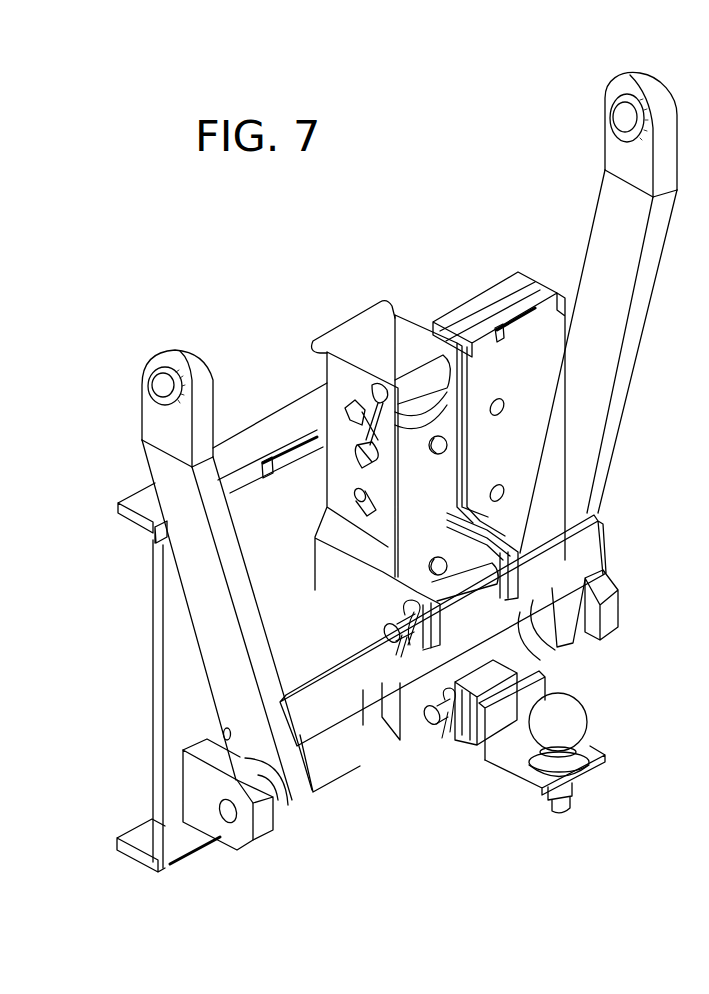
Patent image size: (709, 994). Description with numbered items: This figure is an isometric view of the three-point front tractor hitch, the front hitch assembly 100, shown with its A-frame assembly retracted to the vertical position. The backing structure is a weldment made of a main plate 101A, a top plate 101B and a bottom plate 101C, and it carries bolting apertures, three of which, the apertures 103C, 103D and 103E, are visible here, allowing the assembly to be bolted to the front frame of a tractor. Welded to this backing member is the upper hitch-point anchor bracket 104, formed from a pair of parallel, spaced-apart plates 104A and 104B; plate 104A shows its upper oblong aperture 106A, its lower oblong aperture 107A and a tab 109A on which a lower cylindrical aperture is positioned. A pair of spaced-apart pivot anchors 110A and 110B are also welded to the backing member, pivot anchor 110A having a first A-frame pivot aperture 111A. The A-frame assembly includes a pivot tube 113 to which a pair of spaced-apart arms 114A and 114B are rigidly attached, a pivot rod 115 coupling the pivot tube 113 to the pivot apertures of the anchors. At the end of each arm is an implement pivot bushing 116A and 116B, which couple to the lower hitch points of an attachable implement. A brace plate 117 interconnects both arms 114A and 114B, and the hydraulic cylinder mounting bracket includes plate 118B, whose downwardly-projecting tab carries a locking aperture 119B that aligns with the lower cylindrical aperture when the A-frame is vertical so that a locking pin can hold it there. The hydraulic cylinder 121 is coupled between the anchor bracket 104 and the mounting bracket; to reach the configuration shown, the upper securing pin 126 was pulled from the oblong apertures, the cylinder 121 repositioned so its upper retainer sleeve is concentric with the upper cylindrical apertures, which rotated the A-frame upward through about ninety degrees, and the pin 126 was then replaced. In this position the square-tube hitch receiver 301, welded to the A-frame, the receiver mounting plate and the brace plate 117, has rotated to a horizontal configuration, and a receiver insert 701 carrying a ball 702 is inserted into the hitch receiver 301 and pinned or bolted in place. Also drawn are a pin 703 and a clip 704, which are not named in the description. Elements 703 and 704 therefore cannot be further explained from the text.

The front hitch assembly 100 is at (290, 248).
The main plate 101A is at (180, 676).
The top plate 101B is at (512, 296).
The bottom plate 101C is at (136, 860).
The aperture 103C is at (218, 731).
The aperture 103D is at (505, 410).
The aperture 103E is at (505, 488).
The upper hitch-point anchor bracket 104 is at (333, 317).
The plate 104A is at (340, 375).
The plate 104B is at (410, 338).
The upper oblong aperture 106A is at (356, 434).
The lower oblong aperture 107A is at (350, 496).
The tab 109A is at (387, 616).
The pivot anchor 110A is at (195, 805).
The pivot anchor 110B is at (600, 590).
The first A-frame pivot aperture 111A is at (218, 795).
The pivot tube 113 is at (332, 763).
The arm 114A is at (210, 575).
The arm 114B is at (608, 248).
The pivot rod 115 is at (222, 812).
The implement pivot bushing 116A is at (176, 370).
The implement pivot bushing 116B is at (604, 98).
The brace plate 117 is at (572, 558).
The plate 118B is at (472, 558).
The locking aperture 119B is at (496, 600).
The hydraulic cylinder 121 is at (427, 485).
The upper securing pin 126 is at (368, 392).
The square-tube hitch receiver 301 is at (467, 725).
The receiver insert 701 is at (517, 757).
The ball 702 is at (560, 722).
The pivot pin 703 is at (410, 607).
The receiver pin with clip 704 is at (428, 742).